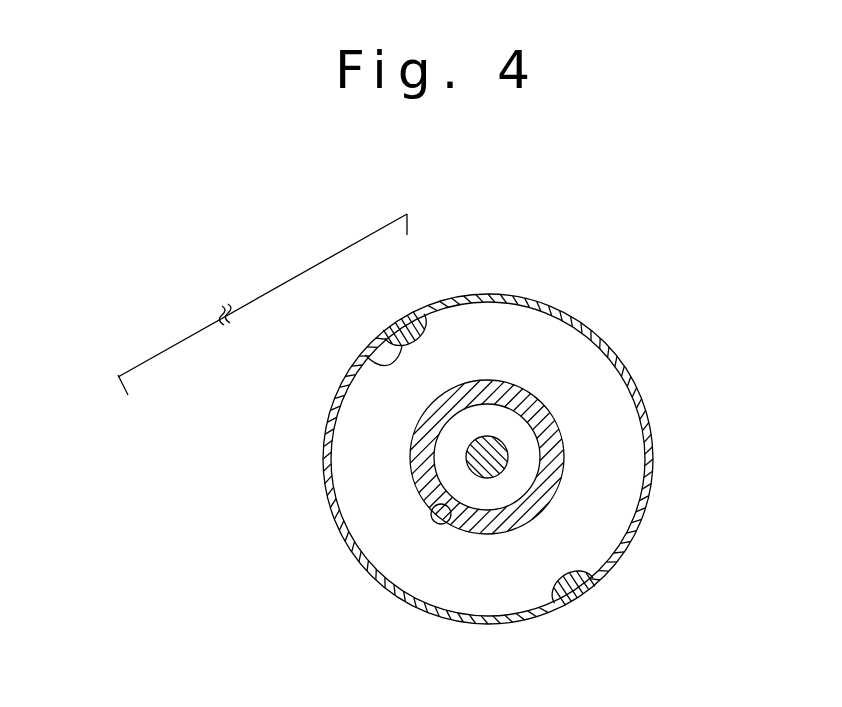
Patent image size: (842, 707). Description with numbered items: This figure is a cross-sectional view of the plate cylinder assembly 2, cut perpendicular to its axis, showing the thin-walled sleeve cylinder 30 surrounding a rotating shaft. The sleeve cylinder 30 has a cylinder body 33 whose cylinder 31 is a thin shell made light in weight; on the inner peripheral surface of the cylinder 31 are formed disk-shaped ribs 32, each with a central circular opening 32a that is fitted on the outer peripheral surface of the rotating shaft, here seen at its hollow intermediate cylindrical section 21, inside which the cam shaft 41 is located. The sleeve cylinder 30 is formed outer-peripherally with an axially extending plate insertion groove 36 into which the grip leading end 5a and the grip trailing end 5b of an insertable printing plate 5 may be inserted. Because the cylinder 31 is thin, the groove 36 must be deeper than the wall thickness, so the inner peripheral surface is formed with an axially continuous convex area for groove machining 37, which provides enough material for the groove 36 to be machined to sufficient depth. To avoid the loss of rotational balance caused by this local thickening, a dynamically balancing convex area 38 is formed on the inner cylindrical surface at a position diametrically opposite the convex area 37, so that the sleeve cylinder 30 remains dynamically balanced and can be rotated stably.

The roller (outer tubular body) 2 is at (553, 437).
The insertable printing plate 5 is at (280, 283).
The grip leading end 5a is at (409, 226).
The grip trailing end 5b is at (121, 388).
The intermediate cylindrical section 21 is at (468, 528).
The sleeve cylinder 30 is at (593, 327).
The cylinder 31 is at (645, 512).
The ribs 32 is at (577, 533).
The central circular opening 32a is at (439, 524).
The cylinder body 33 is at (553, 459).
The plate insertion groove 36 is at (414, 319).
The convex area for groove machining 37 is at (365, 355).
The dynamically balancing convex area 38 is at (555, 585).
The cam shaft 41 is at (461, 463).